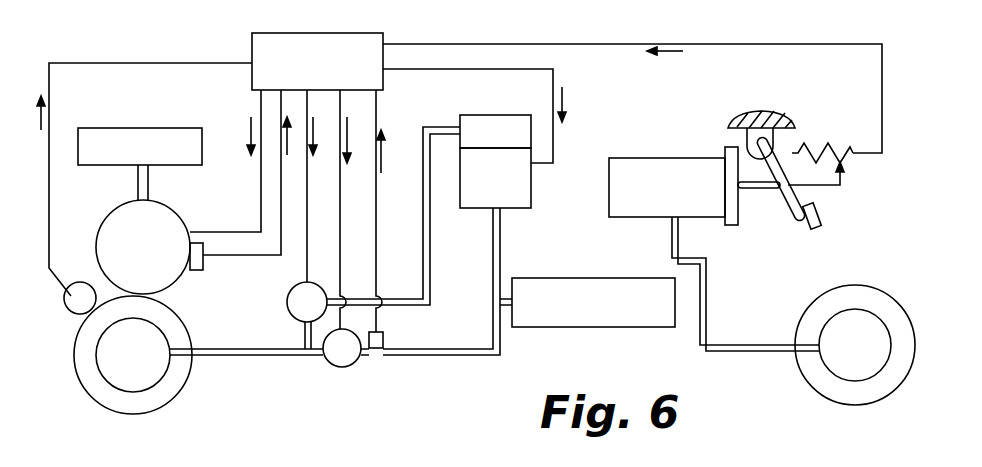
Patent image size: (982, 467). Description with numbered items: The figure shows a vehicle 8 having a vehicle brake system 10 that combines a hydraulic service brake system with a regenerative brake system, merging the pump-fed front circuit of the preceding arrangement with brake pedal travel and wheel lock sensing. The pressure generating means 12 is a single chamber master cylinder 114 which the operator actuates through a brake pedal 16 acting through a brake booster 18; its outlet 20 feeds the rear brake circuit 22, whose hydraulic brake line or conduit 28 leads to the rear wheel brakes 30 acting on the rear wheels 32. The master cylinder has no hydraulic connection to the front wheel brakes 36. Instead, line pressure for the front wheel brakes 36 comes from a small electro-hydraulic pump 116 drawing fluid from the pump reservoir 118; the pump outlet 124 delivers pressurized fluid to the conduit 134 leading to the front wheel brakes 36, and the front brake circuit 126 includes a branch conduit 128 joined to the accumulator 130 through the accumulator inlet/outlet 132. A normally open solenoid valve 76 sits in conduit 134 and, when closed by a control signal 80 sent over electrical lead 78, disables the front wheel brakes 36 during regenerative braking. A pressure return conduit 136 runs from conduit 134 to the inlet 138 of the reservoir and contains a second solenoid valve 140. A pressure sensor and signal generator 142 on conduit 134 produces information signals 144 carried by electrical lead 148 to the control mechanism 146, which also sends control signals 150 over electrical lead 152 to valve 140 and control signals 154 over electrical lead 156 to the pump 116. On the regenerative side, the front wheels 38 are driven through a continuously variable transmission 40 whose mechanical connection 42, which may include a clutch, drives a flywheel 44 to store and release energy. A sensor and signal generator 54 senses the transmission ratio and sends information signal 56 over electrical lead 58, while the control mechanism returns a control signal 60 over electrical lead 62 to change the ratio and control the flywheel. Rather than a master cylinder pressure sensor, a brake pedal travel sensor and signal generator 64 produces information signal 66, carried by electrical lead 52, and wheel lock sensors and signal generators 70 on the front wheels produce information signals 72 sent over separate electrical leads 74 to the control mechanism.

The vehicle 8 is at (782, 108).
The vehicle brake system 10 is at (148, 46).
The pressure generating means 12 is at (548, 183).
The brake pedal 16 is at (820, 222).
The brake booster 18 is at (735, 215).
The outlet 20 is at (680, 226).
The rear brake circuit 22 is at (760, 352).
The hydraulic brake line or conduit 28 is at (707, 312).
The rear wheel brakes 30 is at (852, 318).
The rear wheels 32 is at (845, 390).
The front wheel brakes 36 is at (115, 370).
The front wheels 38 is at (130, 405).
The continuously variable transmission 40 is at (132, 225).
The mechanical connection 42 is at (140, 180).
The flywheel 44 is at (115, 133).
The electrical lead 52 is at (540, 44).
The sensor and signal generator 54 is at (196, 270).
The information signal 56 is at (281, 137).
The electrical lead 58 is at (281, 188).
The control signal 60 is at (248, 128).
The electrical lead 62 is at (259, 160).
The brake pedal travel sensor and signal generator 64 is at (852, 156).
The information signal 66 is at (683, 51).
The wheel lock sensors and signal generators 70 is at (73, 299).
The information signals 72 is at (41, 128).
The electrical leads 74 is at (49, 222).
The solenoid valve 76 is at (326, 364).
The electrical lead 78 is at (341, 208).
The control signal 80 is at (349, 136).
The master cylinder 114 is at (642, 160).
The electro-hydraulic pump 116 is at (515, 198).
The pump reservoir 118 is at (523, 126).
The pump outlet 124 is at (490, 218).
The front brake circuit 126 is at (458, 355).
The branch conduit 128 is at (502, 310).
The accumulator 130 is at (587, 279).
The accumulator inlet/outlet 132 is at (508, 296).
The conduit 134 is at (250, 357).
The pressure return conduit 136 is at (305, 338).
The inlet 138 is at (459, 127).
The solenoid valve 140 is at (287, 305).
The pressure sensor and signal generator 142 is at (374, 349).
The information signals 144 is at (383, 155).
The control mechanism 146 is at (266, 42).
The electrical lead 148 is at (378, 240).
The control signals 150 is at (315, 128).
The electrical lead 152 is at (306, 245).
The control signals 154 is at (565, 95).
The electrical lead 156 is at (443, 69).